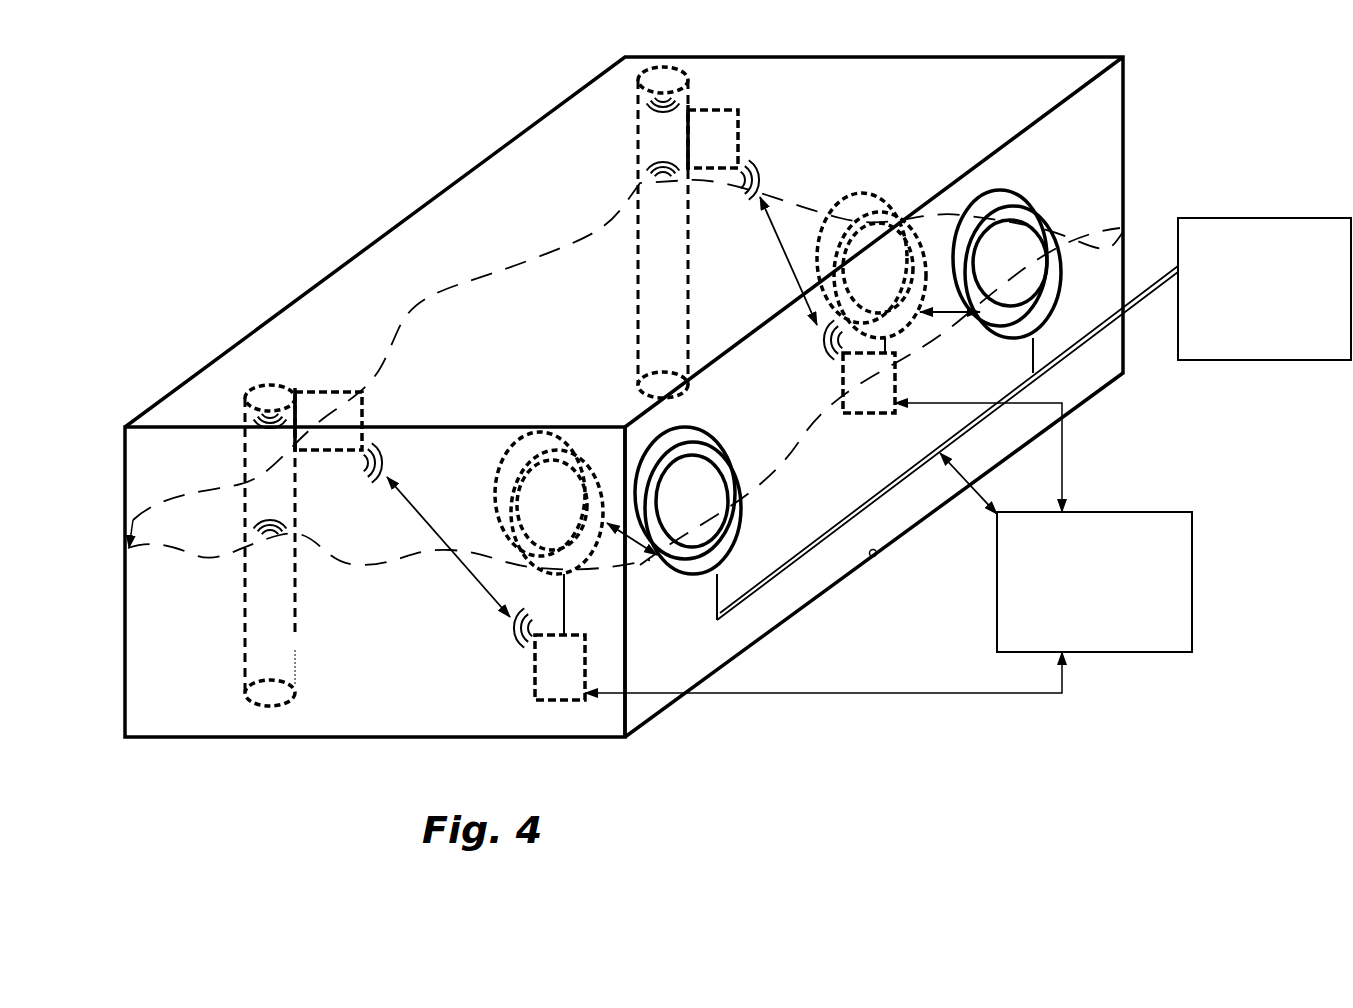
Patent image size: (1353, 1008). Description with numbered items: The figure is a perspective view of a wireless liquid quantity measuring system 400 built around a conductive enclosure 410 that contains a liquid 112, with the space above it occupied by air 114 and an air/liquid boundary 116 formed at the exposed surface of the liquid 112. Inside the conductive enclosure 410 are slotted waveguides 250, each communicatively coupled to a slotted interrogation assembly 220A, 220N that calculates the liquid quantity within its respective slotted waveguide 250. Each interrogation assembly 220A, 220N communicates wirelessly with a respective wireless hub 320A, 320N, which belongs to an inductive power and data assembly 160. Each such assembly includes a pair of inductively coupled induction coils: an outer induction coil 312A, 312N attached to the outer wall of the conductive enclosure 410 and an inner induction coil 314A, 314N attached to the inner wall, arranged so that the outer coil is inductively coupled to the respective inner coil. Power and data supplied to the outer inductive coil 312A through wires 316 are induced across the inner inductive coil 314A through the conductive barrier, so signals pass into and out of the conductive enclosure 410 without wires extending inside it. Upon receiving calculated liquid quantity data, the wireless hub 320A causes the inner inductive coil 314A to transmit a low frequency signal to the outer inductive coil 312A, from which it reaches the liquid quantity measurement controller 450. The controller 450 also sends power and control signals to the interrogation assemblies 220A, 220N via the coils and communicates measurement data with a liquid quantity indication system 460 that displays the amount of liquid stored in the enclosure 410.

The wireless liquid quantity measuring system 400 is at (374, 138).
The conductive enclosure 410 is at (1124, 142).
The inductive power and data assembly 160 is at (642, 589).
The air 114 is at (193, 474).
The liquid 112 is at (202, 633).
The air/liquid boundary 116 is at (318, 560).
The slotted waveguide 250 is at (674, 337).
The slotted interrogation assembly 220N is at (730, 130).
The slotted interrogation assembly 220A is at (314, 397).
The inner induction coil 314N is at (866, 200).
The inner induction coil 314A is at (497, 470).
The outer induction coil 312N is at (985, 328).
The outer induction coil 312A is at (728, 473).
The wireless hub 320N is at (882, 402).
The wireless hub 320A is at (553, 660).
The wires 316 is at (755, 597).
The liquid quantity measurement controller 450 is at (1079, 631).
The liquid quantity indication system 460 is at (1251, 337).